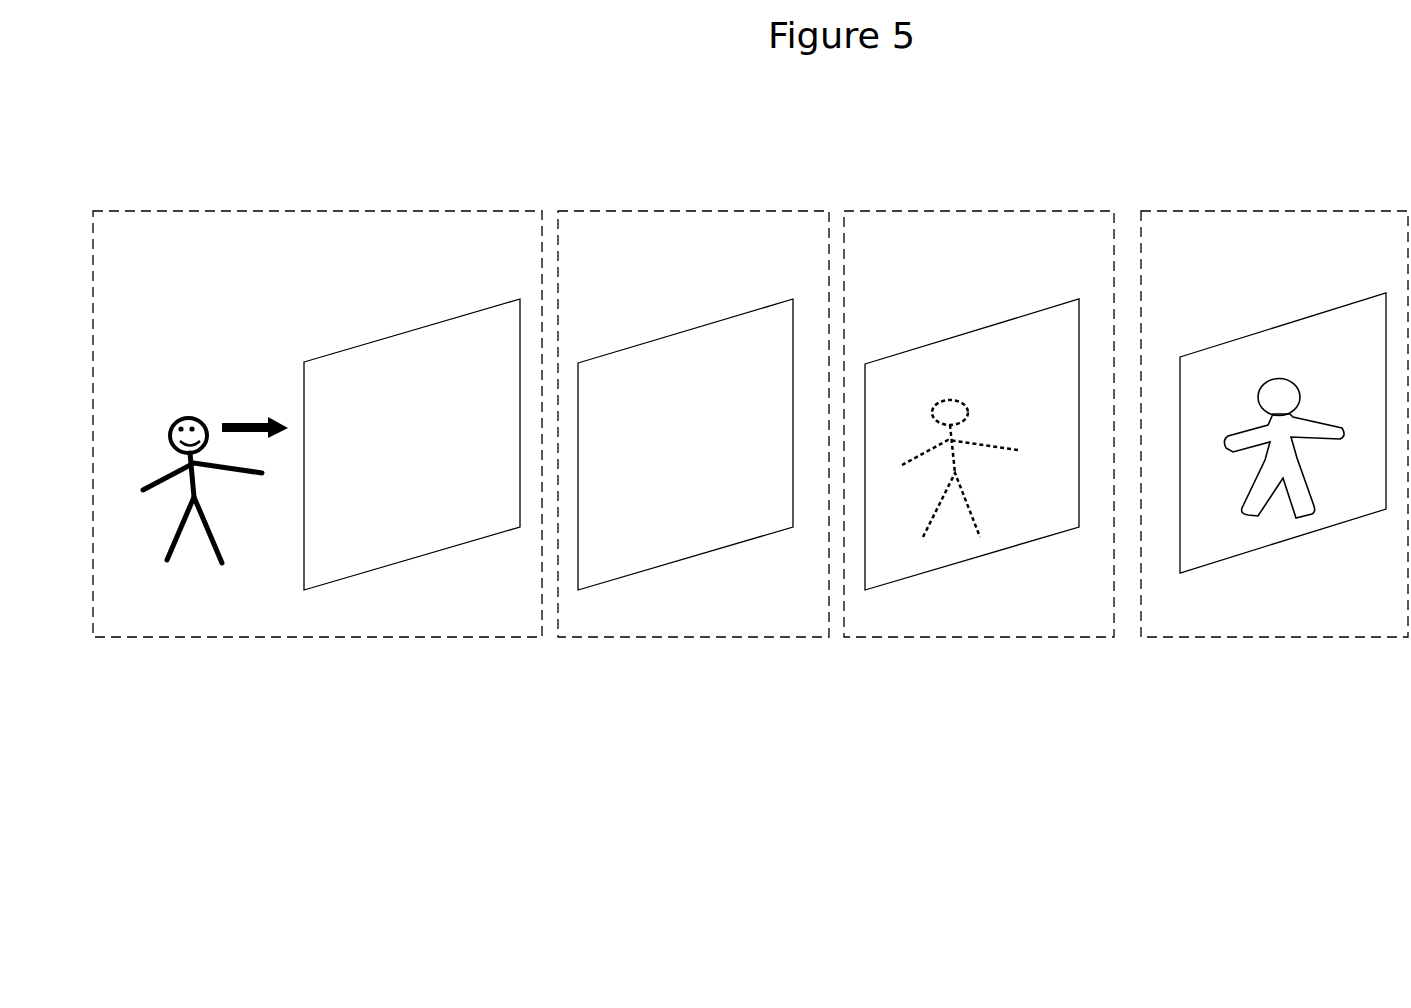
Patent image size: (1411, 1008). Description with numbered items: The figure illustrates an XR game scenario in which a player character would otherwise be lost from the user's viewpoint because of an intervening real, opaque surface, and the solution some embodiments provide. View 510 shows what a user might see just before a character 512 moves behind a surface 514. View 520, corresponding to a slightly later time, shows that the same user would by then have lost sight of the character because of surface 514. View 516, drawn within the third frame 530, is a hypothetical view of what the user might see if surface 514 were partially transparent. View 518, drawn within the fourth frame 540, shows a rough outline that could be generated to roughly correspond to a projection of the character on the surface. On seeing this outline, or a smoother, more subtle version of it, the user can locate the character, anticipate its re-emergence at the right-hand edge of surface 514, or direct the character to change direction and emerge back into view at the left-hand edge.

The view 510 is at (228, 213).
The character 512 is at (199, 480).
The surface 514 is at (402, 528).
The view 520 is at (689, 211).
The third frame (detected outline) 530 is at (1007, 211).
The view 516 is at (969, 507).
The fourth frame (silhouette) 540 is at (1315, 211).
The view 518 is at (1303, 465).